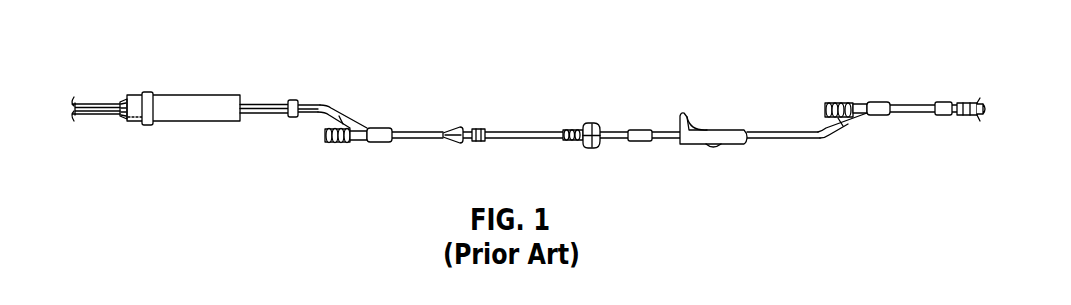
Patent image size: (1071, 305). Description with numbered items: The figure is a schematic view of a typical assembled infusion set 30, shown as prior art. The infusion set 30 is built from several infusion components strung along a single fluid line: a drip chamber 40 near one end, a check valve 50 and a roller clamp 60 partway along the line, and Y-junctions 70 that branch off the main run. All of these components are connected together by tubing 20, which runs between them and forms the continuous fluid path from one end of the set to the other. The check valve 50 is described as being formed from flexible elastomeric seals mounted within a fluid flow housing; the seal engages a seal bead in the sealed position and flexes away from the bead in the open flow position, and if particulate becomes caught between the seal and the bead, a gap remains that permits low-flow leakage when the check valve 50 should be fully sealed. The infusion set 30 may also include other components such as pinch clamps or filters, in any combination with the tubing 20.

The tubing 20 is at (315, 106).
The infusion set 30 is at (579, 41).
The drip chamber 40 is at (195, 95).
The check valve 50 is at (593, 124).
The roller clamp 60 is at (713, 129).
The Y-junctions 70 is at (372, 128).